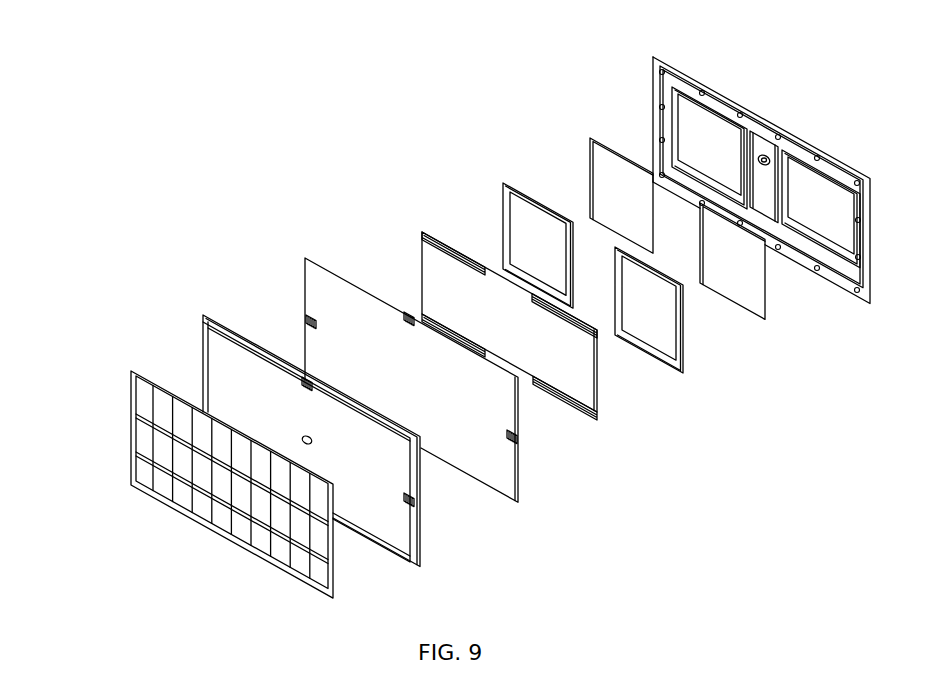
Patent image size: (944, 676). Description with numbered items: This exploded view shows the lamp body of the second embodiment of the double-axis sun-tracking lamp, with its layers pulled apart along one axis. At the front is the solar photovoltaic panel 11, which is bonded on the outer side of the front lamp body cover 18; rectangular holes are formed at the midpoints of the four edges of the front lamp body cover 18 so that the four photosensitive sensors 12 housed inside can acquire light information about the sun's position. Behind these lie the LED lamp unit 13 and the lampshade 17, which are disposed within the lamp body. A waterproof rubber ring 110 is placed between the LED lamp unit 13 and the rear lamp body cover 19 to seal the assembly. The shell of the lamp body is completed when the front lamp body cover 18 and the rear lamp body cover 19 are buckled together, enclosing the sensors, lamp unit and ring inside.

The solar photovoltaic panel 11 is at (182, 432).
The photosensitive sensor 12 is at (310, 320).
The LED lamp unit 13 is at (453, 300).
The lampshade 17 is at (533, 238).
The front lamp body cover 18 is at (257, 390).
The rear lamp body cover 19 is at (664, 122).
The waterproof rubber ring 110 is at (612, 148).